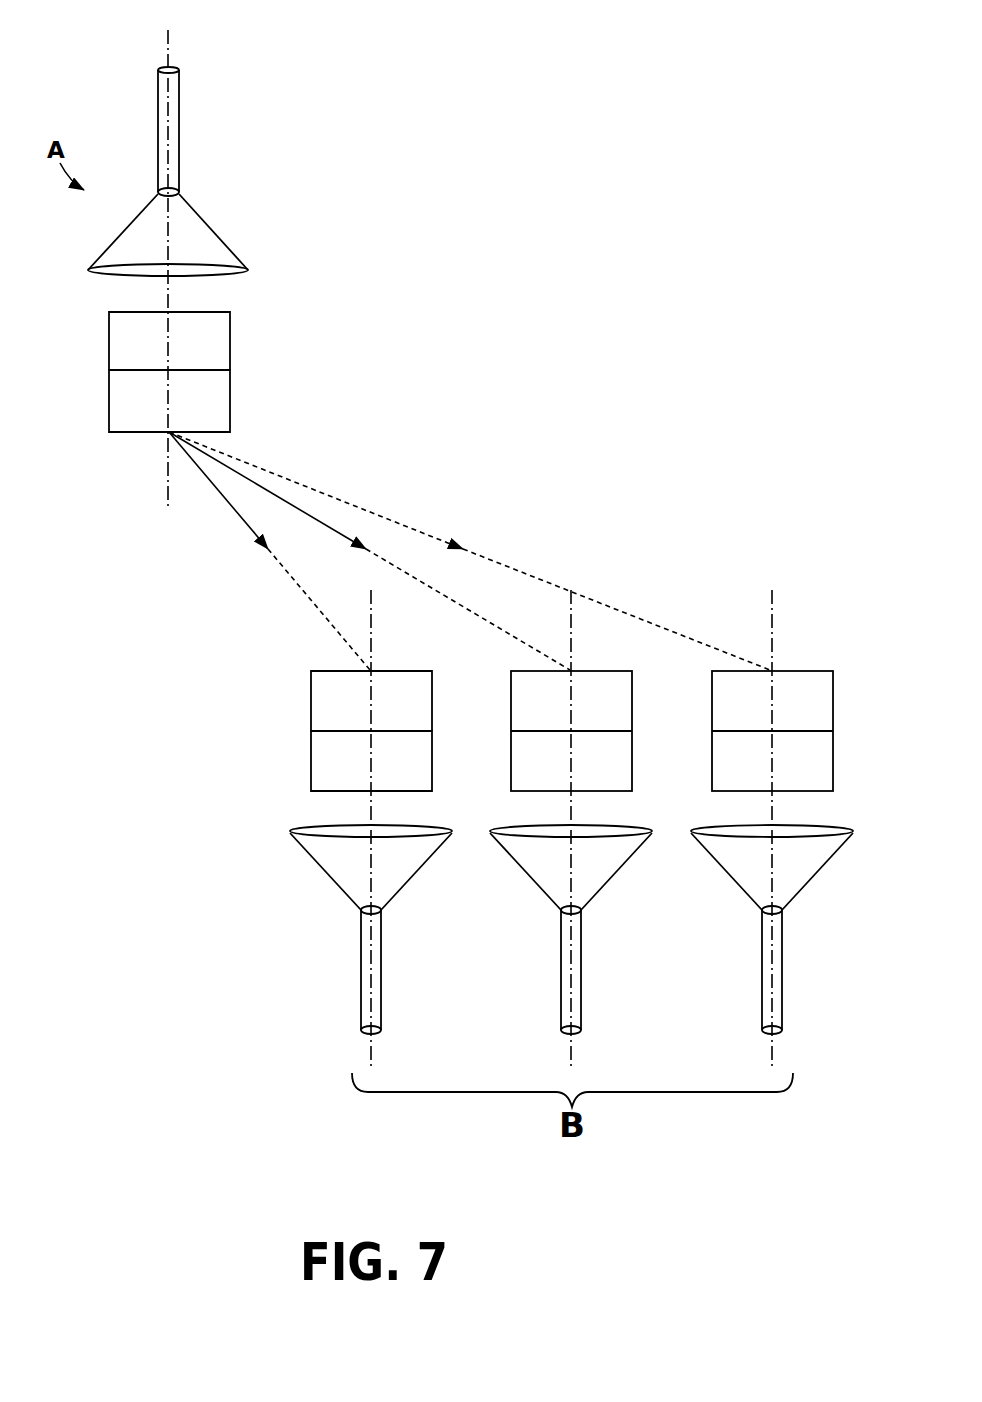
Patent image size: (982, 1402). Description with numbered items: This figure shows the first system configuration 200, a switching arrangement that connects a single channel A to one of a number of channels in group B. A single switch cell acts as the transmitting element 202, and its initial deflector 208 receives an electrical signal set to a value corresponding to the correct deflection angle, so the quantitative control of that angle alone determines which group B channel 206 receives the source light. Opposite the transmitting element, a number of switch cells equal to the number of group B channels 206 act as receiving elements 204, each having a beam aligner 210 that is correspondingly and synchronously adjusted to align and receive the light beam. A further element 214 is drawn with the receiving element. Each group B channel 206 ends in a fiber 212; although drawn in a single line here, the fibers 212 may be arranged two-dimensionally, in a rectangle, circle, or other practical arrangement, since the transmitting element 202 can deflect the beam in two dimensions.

The first system configuration 200 is at (438, 310).
The transmitting element 202 is at (230, 402).
The initial deflector 208 is at (230, 340).
The receiving element 204 is at (572, 727).
The output module upper element 214 is at (432, 706).
The beam aligner 210 is at (432, 772).
The group B channel 206 is at (591, 929).
The fiber 212 is at (382, 972).